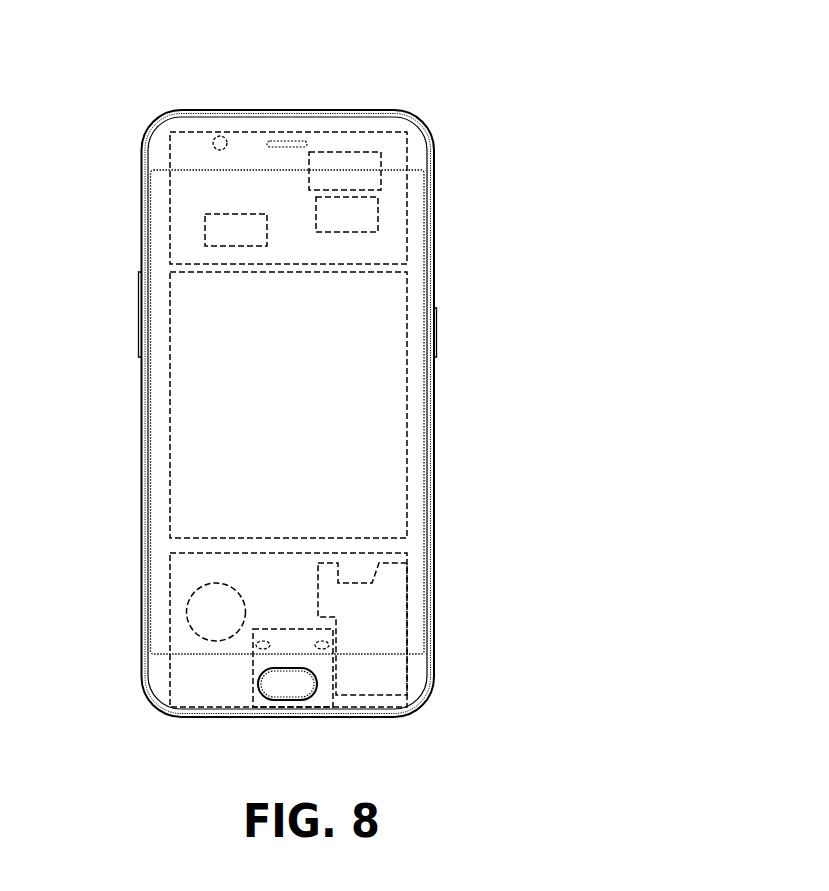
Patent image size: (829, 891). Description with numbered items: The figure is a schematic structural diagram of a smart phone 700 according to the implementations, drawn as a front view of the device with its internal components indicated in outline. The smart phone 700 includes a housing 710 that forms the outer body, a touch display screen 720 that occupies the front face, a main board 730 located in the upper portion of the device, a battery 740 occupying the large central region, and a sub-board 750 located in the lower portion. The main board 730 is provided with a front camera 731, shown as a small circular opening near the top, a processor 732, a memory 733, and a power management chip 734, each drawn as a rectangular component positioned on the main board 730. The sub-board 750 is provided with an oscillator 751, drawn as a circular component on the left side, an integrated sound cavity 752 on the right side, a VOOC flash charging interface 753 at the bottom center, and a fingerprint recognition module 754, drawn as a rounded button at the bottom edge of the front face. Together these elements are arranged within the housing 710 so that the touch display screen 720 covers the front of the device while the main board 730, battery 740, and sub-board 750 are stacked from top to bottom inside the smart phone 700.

The smart phone 700 is at (338, 52).
The housing 710 is at (423, 122).
The touch display screen 720 is at (417, 377).
The main board 730 is at (408, 168).
The front camera 731 is at (223, 135).
The processor 732 is at (372, 152).
The memory 733 is at (380, 210).
The power management chip 734 is at (208, 225).
The battery 740 is at (353, 330).
The sub-board 750 is at (407, 553).
The oscillator 751 is at (185, 613).
The integrated sound cavity 752 is at (383, 597).
The VOOC flash charging interface 753 is at (325, 705).
The fingerprint recognition module 754 is at (260, 695).